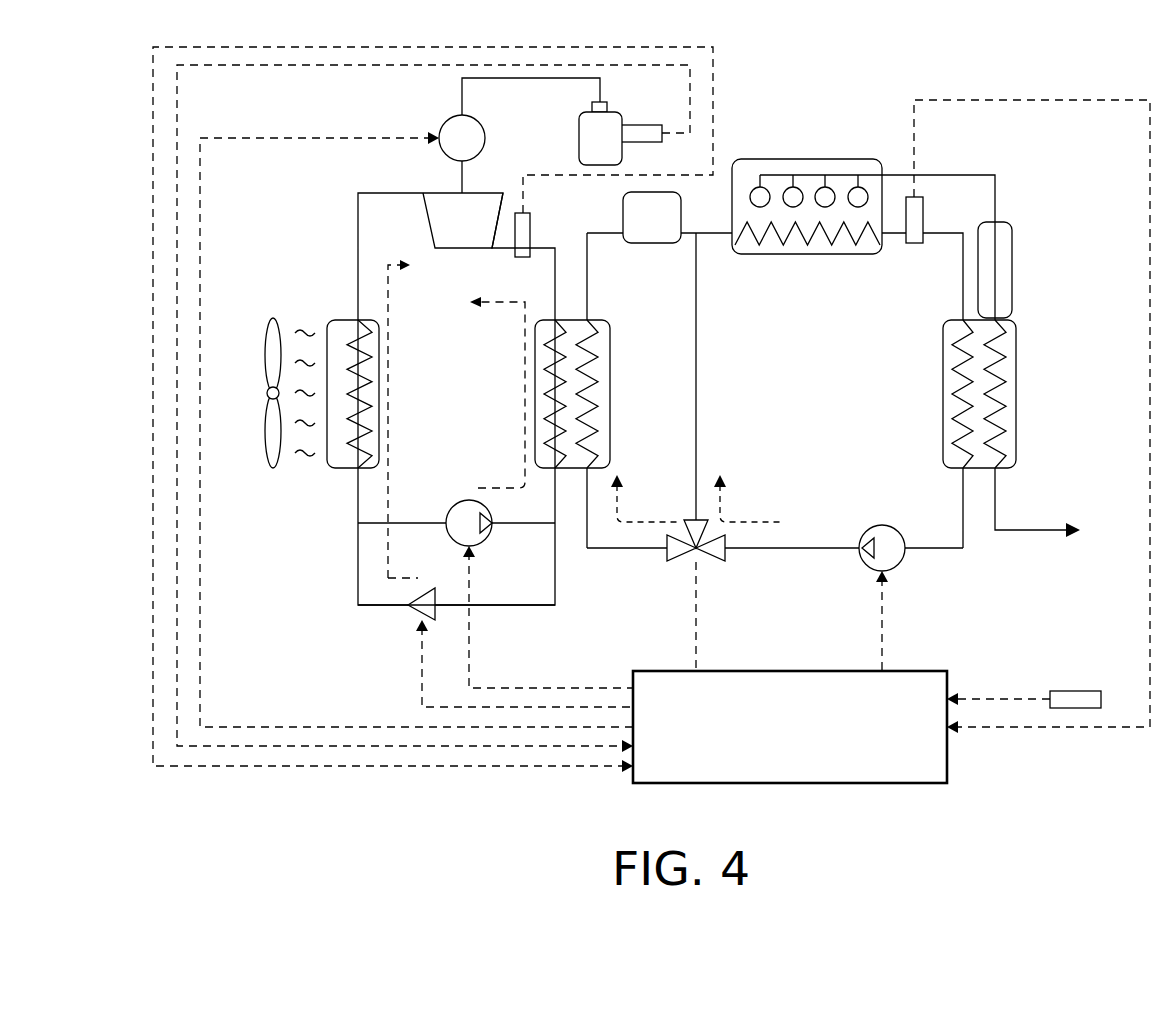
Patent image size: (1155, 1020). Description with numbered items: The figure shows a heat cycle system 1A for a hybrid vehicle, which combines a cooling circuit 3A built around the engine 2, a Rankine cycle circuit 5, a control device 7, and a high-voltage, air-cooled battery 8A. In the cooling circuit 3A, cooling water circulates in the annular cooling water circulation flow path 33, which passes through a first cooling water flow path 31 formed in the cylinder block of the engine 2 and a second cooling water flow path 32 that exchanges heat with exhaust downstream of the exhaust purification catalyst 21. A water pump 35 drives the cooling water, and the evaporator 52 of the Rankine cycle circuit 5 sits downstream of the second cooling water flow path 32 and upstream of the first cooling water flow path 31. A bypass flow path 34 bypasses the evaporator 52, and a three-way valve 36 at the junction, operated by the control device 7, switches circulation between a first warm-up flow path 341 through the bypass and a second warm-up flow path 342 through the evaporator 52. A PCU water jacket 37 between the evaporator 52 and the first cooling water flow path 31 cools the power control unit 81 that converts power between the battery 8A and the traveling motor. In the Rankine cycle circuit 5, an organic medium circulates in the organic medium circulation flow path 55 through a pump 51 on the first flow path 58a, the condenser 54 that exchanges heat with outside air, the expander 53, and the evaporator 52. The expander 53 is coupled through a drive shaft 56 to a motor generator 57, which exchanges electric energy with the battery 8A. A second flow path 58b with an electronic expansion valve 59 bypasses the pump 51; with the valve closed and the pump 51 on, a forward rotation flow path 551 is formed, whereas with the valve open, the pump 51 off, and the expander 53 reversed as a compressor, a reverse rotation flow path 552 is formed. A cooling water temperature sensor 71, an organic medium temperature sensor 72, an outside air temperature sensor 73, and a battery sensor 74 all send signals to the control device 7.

The heat cycle system 1A is at (1118, 72).
The engine 2 is at (835, 159).
The cooling circuit 3A is at (975, 157).
The Rankine cycle circuit 5 is at (338, 215).
The control device 7 is at (933, 671).
The battery 8A is at (582, 113).
The exhaust purification catalyst 21 is at (1014, 266).
The first cooling water flow path 31 is at (805, 255).
The second cooling water flow path 32 is at (1018, 380).
The cooling water circulation flow path 33 is at (826, 547).
The bypass flow path 34 is at (699, 380).
The water pump 35 is at (882, 525).
The three-way valve 36 is at (710, 560).
The PCU water jacket 37 is at (652, 245).
The first warm-up flow path 341 is at (757, 512).
The second warm-up flow path 342 is at (654, 512).
The pump 51 is at (461, 498).
The evaporator 52 is at (612, 383).
The expander 53 is at (428, 220).
The condenser 54 is at (336, 318).
The organic medium circulation flow path 55 is at (358, 249).
The forward rotation flow path 551 is at (522, 412).
The reverse rotation flow path 552 is at (392, 352).
The drive shaft 56 is at (460, 178).
The motor generator 57 is at (487, 137).
The first flow path 58a is at (420, 522).
The second flow path 58b is at (517, 605).
The electronic expansion valve 59 is at (437, 592).
The cooling water temperature sensor 71 is at (914, 243).
The organic medium temperature sensor 72 is at (518, 259).
The outside air temperature sensor 73 is at (1075, 691).
The battery sensor 74 is at (648, 125).
The power control unit 81 is at (622, 211).